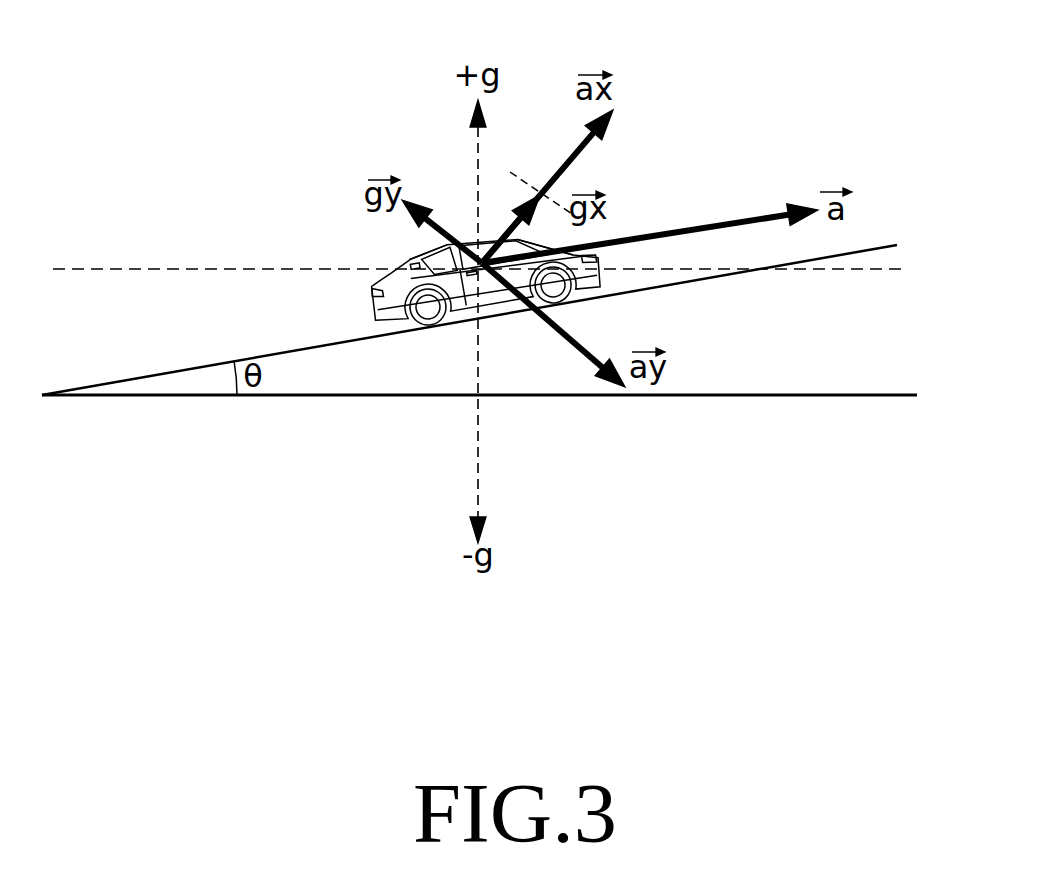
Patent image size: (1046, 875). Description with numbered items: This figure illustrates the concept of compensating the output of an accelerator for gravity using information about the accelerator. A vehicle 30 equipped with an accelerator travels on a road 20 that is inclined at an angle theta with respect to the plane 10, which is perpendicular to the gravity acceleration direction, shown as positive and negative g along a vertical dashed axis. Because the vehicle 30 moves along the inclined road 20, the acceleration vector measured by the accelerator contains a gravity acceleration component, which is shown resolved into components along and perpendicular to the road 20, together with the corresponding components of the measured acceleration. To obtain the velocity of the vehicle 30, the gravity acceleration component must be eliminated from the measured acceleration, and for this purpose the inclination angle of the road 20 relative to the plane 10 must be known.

The plane 10 is at (898, 395).
The road 20 is at (897, 245).
The vehicle 30 is at (373, 296).